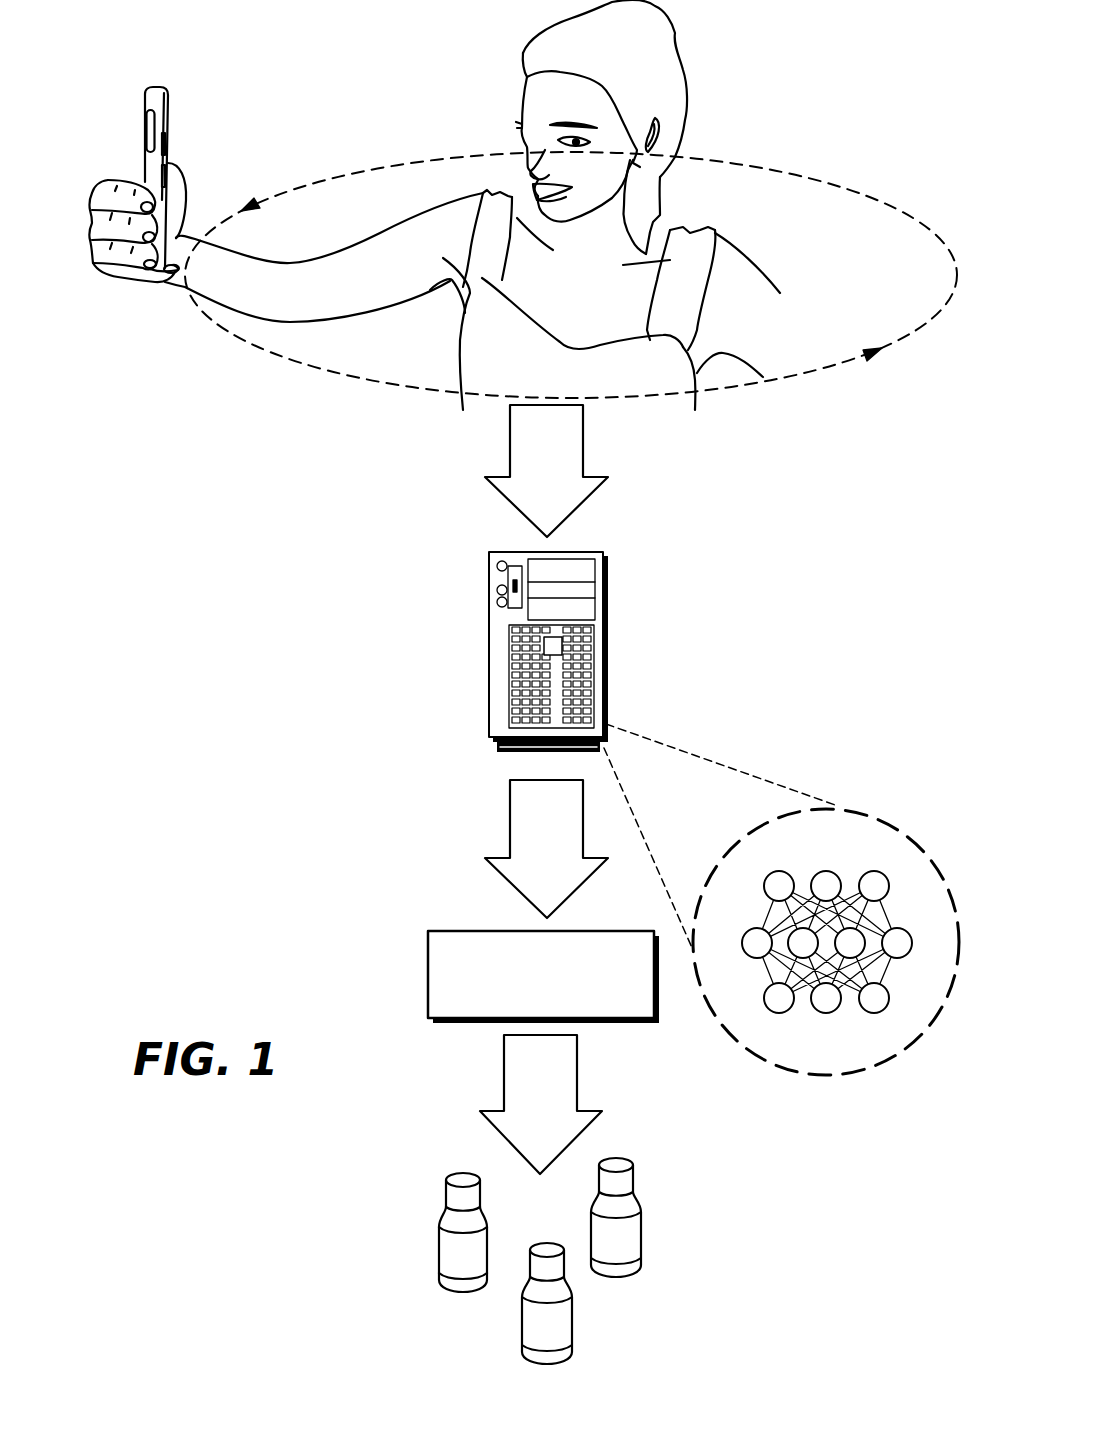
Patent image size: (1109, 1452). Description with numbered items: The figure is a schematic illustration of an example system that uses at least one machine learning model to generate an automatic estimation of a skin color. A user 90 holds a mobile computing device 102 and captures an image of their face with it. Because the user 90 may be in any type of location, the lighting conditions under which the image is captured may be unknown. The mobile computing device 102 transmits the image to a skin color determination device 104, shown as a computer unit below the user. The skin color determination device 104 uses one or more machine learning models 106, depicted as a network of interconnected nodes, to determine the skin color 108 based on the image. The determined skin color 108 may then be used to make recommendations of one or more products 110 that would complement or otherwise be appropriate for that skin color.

The user 90 is at (458, 106).
The mobile computing device 102 is at (172, 96).
The skin color determination device 104 is at (608, 680).
The machine learning model 106 is at (905, 830).
The skin color 108 is at (428, 966).
The product 110 is at (412, 1200).